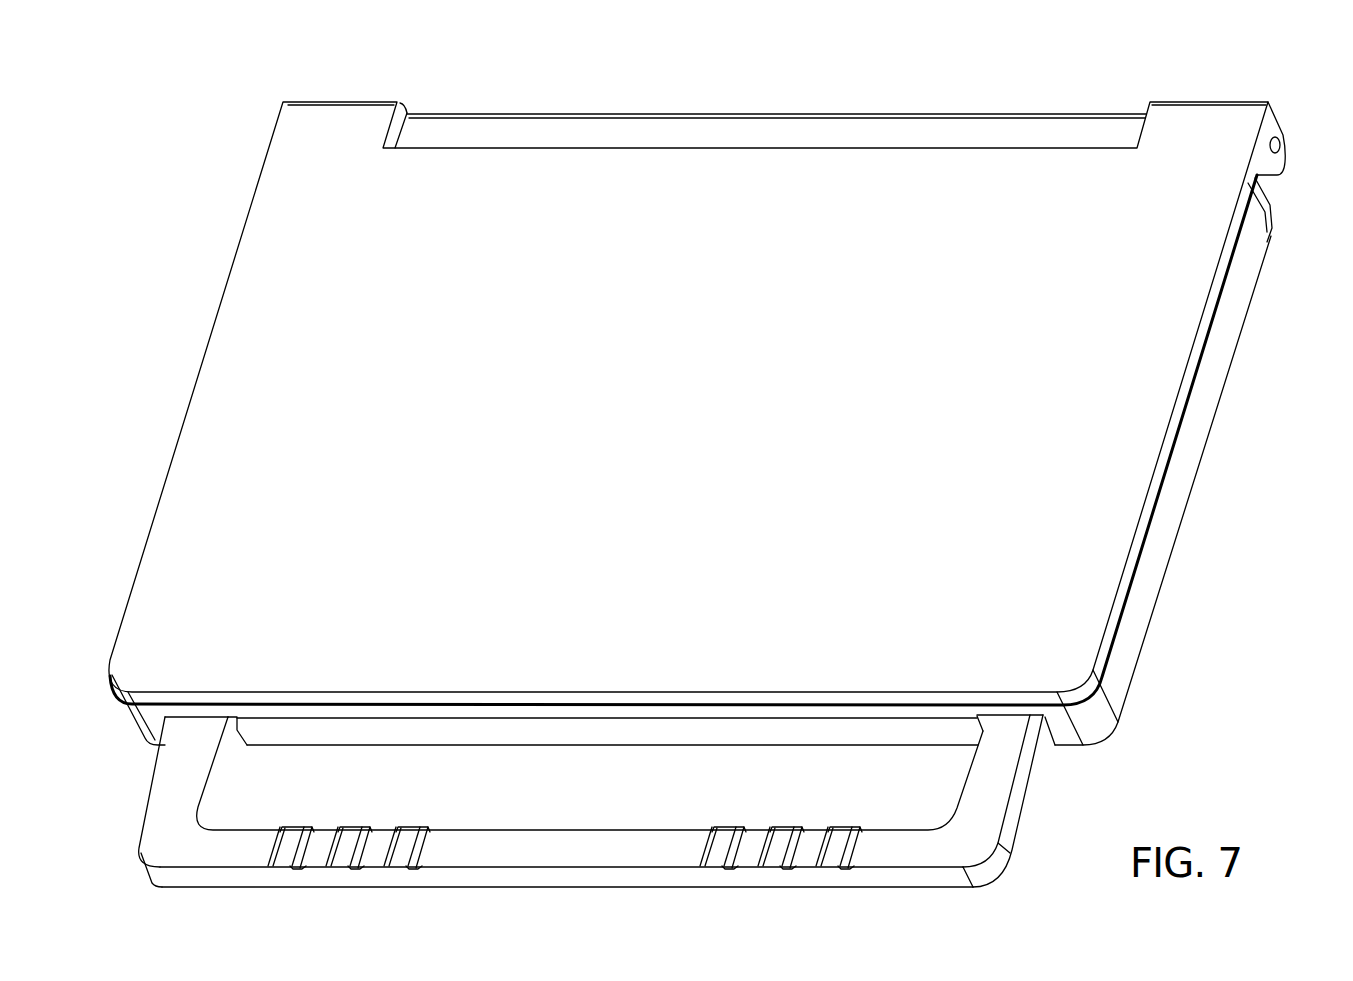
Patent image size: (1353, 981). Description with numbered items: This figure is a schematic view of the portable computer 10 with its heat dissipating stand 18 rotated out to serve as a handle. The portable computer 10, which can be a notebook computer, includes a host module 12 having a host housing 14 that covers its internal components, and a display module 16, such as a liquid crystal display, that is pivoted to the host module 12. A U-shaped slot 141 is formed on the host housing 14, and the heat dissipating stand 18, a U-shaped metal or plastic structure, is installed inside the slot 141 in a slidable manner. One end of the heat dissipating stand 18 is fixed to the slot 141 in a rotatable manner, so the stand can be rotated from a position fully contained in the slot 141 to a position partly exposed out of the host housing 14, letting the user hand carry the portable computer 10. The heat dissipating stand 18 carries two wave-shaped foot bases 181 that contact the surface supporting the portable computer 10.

The portable computer 10 is at (209, 117).
The host module 12 is at (1271, 203).
The host housing 14 is at (1193, 430).
The slot 141 is at (1050, 747).
The display module 16 is at (1252, 97).
The heat dissipating stand 18 is at (1033, 815).
The foot base 181 is at (347, 838).